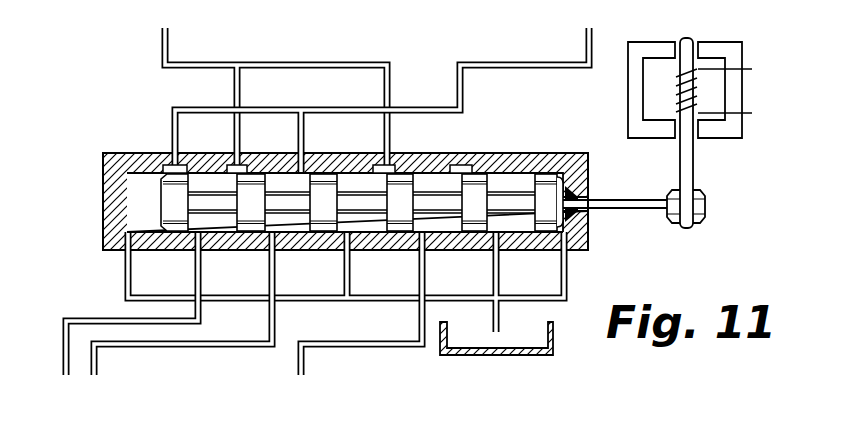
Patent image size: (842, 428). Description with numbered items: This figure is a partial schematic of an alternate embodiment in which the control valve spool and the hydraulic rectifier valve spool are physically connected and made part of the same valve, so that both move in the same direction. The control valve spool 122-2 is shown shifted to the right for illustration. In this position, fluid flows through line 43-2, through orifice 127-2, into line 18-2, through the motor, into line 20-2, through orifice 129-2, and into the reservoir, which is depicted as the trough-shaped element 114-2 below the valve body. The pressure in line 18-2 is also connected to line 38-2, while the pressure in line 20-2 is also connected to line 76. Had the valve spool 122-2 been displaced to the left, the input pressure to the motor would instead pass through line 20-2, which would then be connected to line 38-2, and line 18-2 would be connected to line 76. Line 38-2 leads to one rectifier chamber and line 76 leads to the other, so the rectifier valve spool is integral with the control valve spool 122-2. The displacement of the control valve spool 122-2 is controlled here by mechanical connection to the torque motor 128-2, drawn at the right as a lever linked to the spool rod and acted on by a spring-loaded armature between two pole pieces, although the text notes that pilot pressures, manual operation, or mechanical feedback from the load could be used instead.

The control valve spool 122-2 is at (473, 248).
The orifice 129-2 is at (399, 162).
The orifice 127-2 is at (478, 160).
The torque motor 128-2 is at (740, 49).
The reservoir tank 114-2 is at (553, 352).
The line 20-2 is at (265, 91).
The line 18-2 is at (399, 91).
The line 76 is at (115, 316).
The line 38-2 is at (183, 316).
The line 43-2 is at (348, 316).